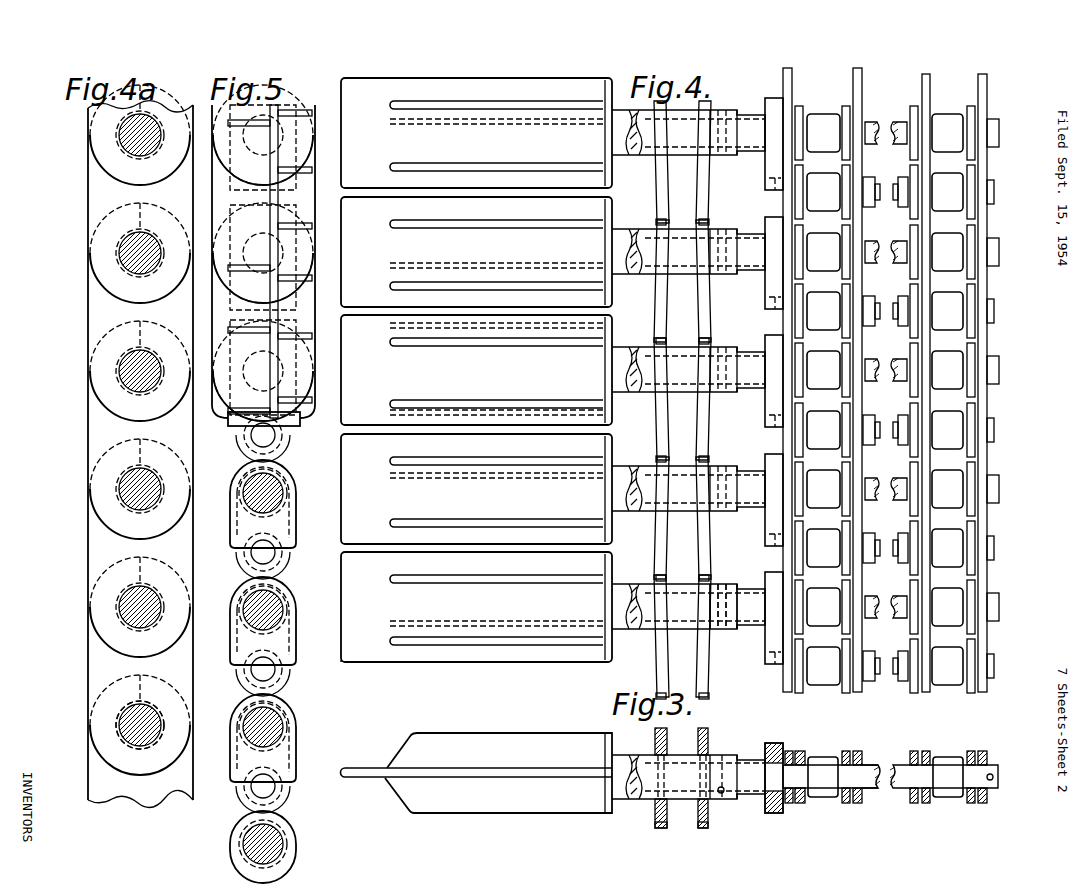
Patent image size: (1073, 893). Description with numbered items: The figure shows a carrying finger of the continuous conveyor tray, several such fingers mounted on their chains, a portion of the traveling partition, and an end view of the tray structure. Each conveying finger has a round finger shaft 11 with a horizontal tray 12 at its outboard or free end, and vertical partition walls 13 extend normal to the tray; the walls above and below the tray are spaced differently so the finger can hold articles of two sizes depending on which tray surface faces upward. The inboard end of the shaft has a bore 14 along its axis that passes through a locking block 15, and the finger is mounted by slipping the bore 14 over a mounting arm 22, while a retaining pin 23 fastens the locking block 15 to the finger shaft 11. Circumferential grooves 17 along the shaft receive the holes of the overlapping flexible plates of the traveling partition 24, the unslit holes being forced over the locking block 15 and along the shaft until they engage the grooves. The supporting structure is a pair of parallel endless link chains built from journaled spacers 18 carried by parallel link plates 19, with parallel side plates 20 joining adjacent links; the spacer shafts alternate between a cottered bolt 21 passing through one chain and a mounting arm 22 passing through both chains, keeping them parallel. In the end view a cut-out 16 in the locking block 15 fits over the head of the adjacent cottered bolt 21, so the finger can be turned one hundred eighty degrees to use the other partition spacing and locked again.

In FIG. 4A, the finger shaft 11 is at (160, 741).
In FIG. 4, the finger shaft 11 is at (650, 629).
In FIG. 3, the finger shaft 11 is at (651, 801).
In FIG. 5, the horizontal tray 12 is at (236, 411).
In FIG. 4, the horizontal tray 12 is at (382, 660).
In FIG. 3, the horizontal tray 12 is at (405, 761).
In FIG. 5, the vertical partition walls 13 is at (300, 413).
In FIG. 4, the vertical partition walls 13 is at (492, 642).
In FIG. 3, the vertical partition walls 13 is at (484, 808).
In FIG. 4, the bore 14 is at (716, 583).
In FIG. 3, the bore 14 is at (722, 762).
In FIG. 5, the locking block 15 is at (298, 661).
In FIG. 4, the locking block 15 is at (772, 576).
In FIG. 3, the locking block 15 is at (770, 749).
In FIG. 5, the cut-out 16 is at (275, 762).
In FIG. 4A, the circumferential grooves 17 is at (118, 731).
In FIG. 4, the circumferential grooves 17 is at (659, 575).
In FIG. 3, the circumferential grooves 17 is at (702, 762).
In FIG. 4, the journaled spacers 18 is at (942, 531).
In FIG. 3, the journaled spacers 18 is at (826, 757).
In FIG. 5, the link plates 19 is at (292, 697).
In FIG. 4, the link plates 19 is at (919, 401).
In FIG. 3, the link plates 19 is at (847, 803).
In FIG. 5, the side plates 20 is at (292, 636).
In FIG. 4, the side plates 20 is at (912, 548).
In FIG. 3, the side plates 20 is at (857, 751).
In FIG. 5, the cottered bolt 21 is at (276, 791).
In FIG. 4, the cottered bolt 21 is at (900, 306).
In FIG. 4, the mounting arm 22 is at (902, 249).
In FIG. 3, the mounting arm 22 is at (870, 773).
In FIG. 4, the retaining pin 23 is at (735, 620).
In FIG. 3, the retaining pin 23 is at (722, 795).
In FIG. 4A, the traveling partition 24 is at (88, 787).
In FIG. 4, the traveling partition 24 is at (664, 286).
In FIG. 3, the traveling partition 24 is at (703, 829).